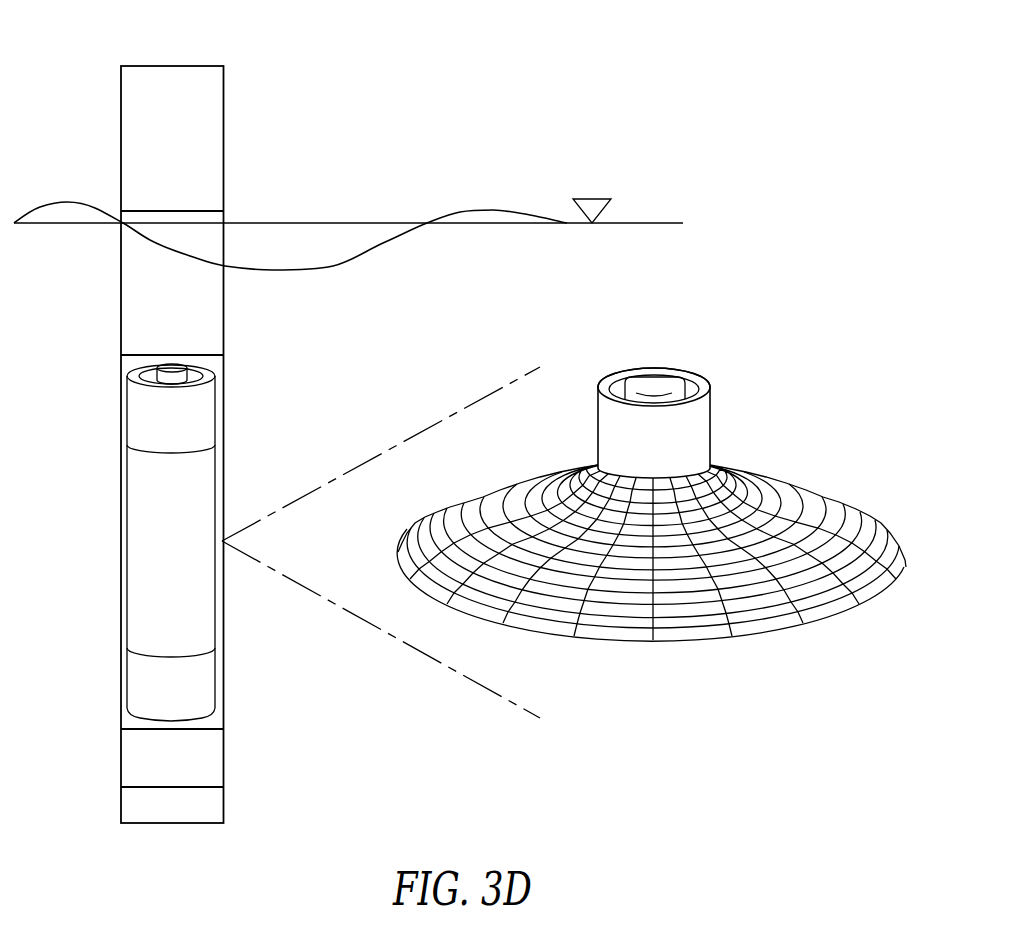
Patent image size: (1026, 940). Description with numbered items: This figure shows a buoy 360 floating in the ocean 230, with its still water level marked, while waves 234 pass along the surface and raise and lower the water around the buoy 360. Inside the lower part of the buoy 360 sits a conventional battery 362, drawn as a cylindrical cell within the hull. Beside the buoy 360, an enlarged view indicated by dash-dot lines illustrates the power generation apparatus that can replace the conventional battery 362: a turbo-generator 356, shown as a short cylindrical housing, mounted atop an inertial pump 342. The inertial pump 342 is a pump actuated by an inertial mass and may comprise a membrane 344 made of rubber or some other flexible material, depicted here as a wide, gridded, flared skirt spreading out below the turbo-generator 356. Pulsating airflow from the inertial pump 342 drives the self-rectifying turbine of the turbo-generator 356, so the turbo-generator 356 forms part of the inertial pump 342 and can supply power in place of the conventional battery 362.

The buoy 360 is at (207, 53).
The ocean 230 is at (636, 266).
The waves 234 is at (289, 273).
The conventional battery 362 is at (126, 545).
The turbo-generator 356 is at (693, 371).
The membrane 344 is at (804, 481).
The inertial pump 342 is at (651, 572).